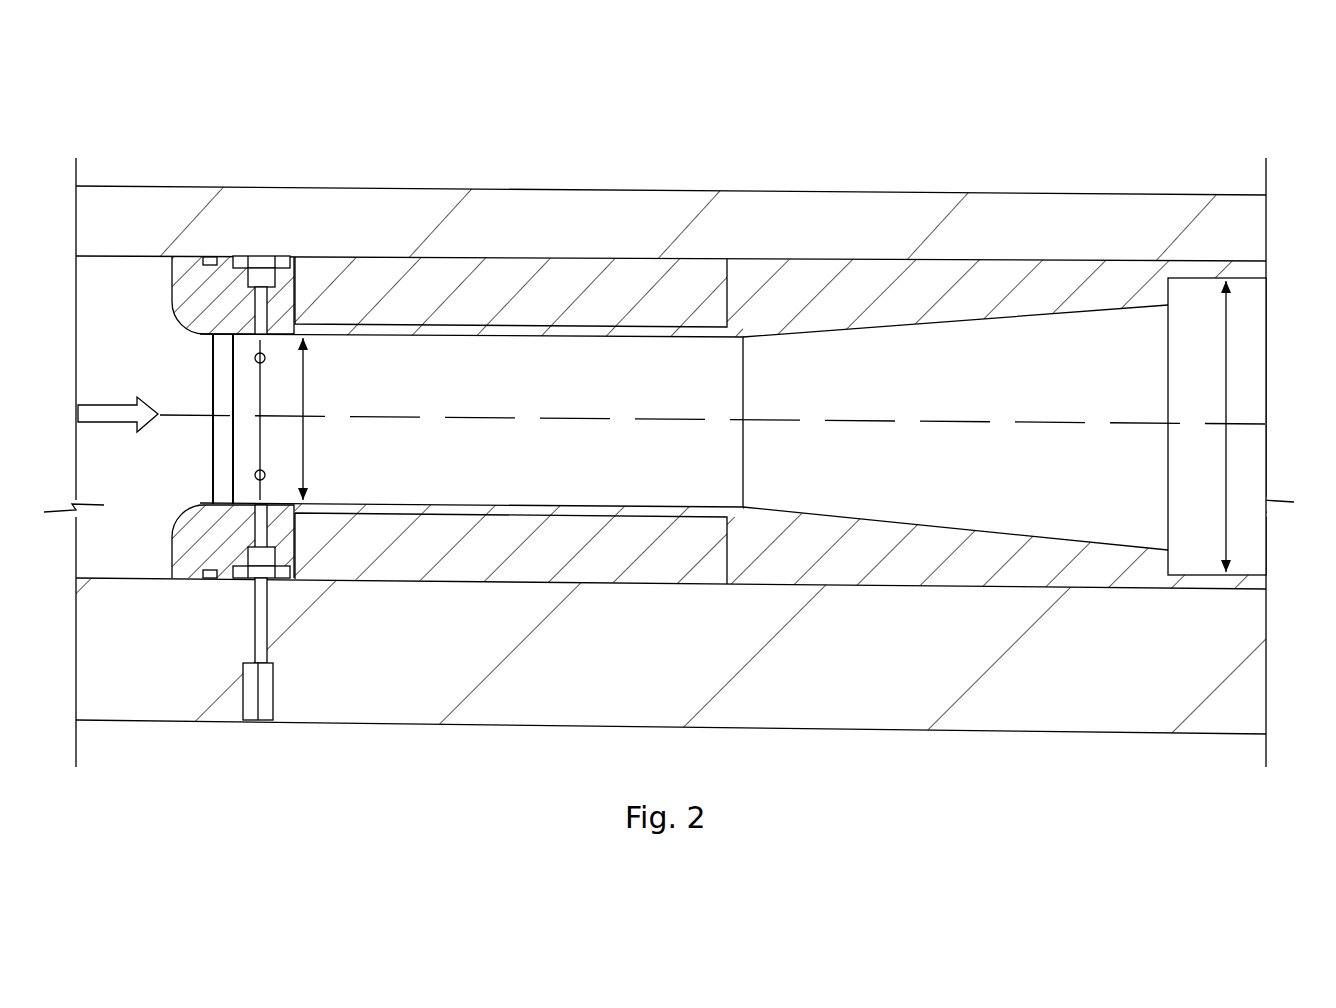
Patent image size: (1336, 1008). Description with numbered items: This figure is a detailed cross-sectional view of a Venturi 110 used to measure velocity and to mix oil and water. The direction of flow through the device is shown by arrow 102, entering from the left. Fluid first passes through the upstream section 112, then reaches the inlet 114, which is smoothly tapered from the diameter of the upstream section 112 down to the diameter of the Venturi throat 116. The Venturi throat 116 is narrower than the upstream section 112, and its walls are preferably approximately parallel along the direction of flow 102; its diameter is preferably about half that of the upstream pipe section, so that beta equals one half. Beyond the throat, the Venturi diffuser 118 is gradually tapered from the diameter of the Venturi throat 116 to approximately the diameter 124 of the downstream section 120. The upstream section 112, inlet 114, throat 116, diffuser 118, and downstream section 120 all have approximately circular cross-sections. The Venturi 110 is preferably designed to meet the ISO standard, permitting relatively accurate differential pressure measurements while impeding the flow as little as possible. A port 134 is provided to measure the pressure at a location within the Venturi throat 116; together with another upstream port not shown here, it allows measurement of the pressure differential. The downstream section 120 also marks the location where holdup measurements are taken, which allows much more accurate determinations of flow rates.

The Venturi 110 is at (571, 146).
The upstream section 112 is at (119, 253).
The inlet 114 is at (178, 503).
The Venturi throat 116 is at (518, 508).
The Venturi diffuser 118 is at (988, 542).
The downstream section 120 is at (1189, 270).
The diameter 124 is at (1241, 418).
The port 134 is at (244, 622).
The arrow 102 is at (118, 428).